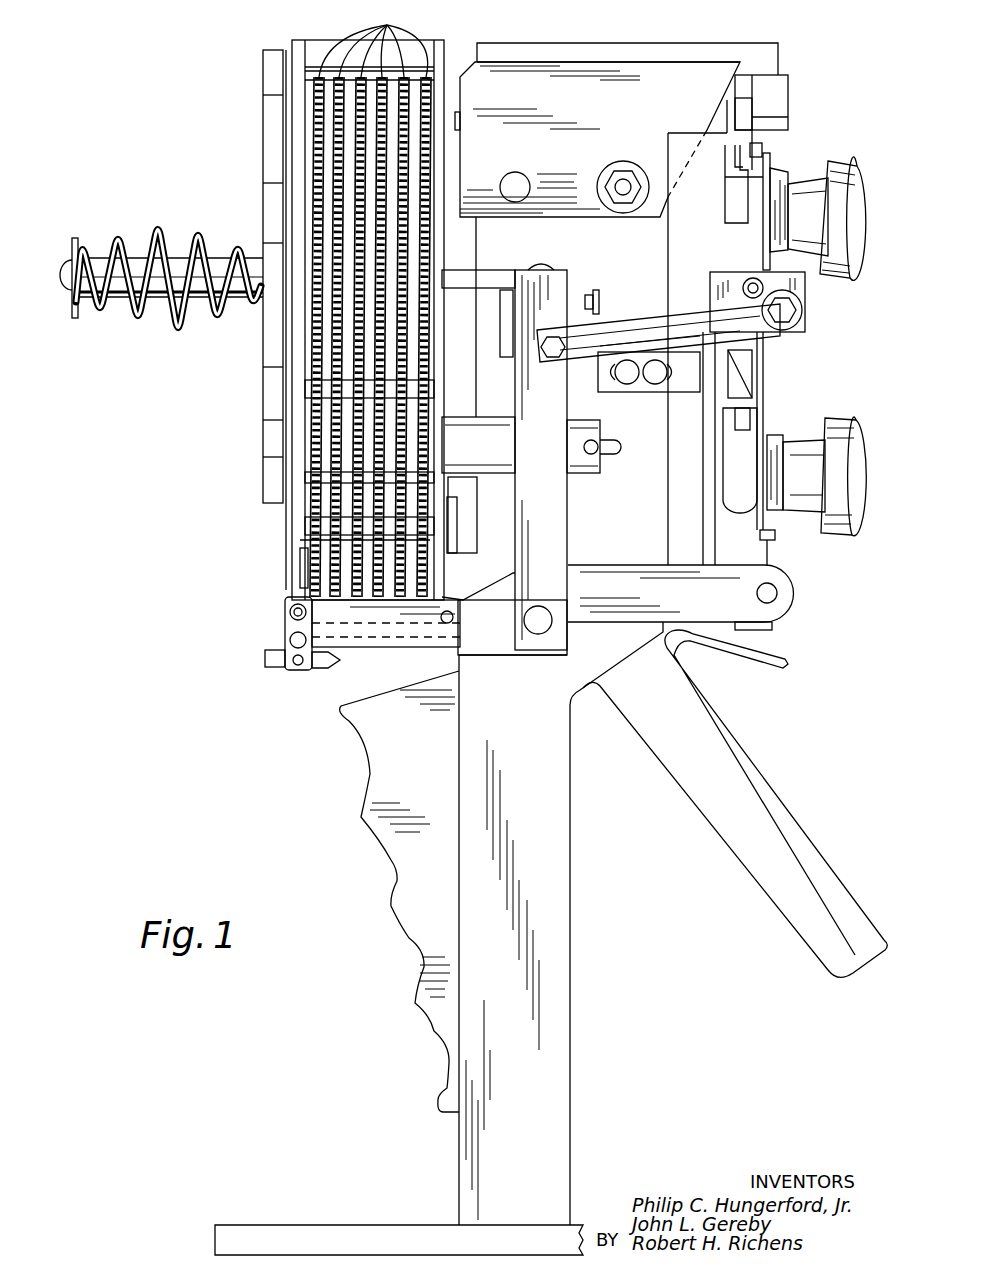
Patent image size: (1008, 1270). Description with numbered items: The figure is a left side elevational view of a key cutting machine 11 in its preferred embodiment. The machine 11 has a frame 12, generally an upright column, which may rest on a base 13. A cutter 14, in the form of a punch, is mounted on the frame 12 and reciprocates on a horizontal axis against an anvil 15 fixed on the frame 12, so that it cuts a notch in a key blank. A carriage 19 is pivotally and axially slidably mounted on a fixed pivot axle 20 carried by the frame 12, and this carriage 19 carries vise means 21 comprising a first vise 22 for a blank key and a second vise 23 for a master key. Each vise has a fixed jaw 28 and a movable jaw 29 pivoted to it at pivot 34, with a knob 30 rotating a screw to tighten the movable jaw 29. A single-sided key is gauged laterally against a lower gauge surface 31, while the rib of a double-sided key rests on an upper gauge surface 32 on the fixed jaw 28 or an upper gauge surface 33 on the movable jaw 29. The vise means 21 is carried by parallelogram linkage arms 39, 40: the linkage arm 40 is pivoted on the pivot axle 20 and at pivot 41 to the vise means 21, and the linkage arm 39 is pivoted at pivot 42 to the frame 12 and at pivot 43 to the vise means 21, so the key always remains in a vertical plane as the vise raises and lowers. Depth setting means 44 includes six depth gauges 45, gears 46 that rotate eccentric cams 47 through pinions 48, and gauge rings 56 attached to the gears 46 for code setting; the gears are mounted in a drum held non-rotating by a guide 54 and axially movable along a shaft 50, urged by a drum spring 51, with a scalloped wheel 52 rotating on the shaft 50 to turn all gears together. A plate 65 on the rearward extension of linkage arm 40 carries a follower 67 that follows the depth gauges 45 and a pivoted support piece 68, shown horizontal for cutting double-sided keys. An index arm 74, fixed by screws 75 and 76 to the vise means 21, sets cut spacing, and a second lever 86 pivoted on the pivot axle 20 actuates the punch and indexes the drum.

The key cutting machine 11 is at (838, 80).
The frame 12 is at (778, 52).
The base 13 is at (320, 1225).
The cutter 14 is at (790, 92).
The anvil 15 is at (717, 120).
The carriage 19 is at (567, 556).
The pivot axle 20 is at (538, 640).
The vise means 21 is at (758, 540).
The first vise 22 is at (740, 208).
The second vise 23 is at (740, 462).
The fixed jaw 28 is at (726, 180).
The movable jaw 29 is at (782, 165).
The knob 30 is at (858, 182).
The lower gauge surface 31 is at (762, 128).
The upper gauge surface 32 is at (738, 160).
The upper gauge surface 33 is at (764, 146).
The pivot 34 is at (753, 278).
The linkage arm 39 is at (615, 330).
The linkage arm 40 is at (624, 565).
The pivot 41 is at (777, 593).
The pivot 42 is at (551, 360).
The pivot 43 is at (782, 330).
The depth setting means 44 is at (260, 578).
The depth gauges 45 is at (320, 547).
The gears 46 is at (373, 45).
The cams 47 is at (322, 512).
The pinions 48 is at (320, 562).
The shaft 50 is at (150, 320).
The drum spring 51 is at (168, 232).
The scalloped wheel 52 is at (264, 52).
The guide 54 is at (495, 420).
The gauge ring 56 is at (338, 150).
The plate 65 is at (376, 645).
The follower 67 is at (285, 604).
The support piece 68 is at (322, 670).
The index arm 74 is at (485, 272).
The screw 75 is at (543, 266).
The screw 76 is at (600, 298).
The second lever 86 is at (772, 800).